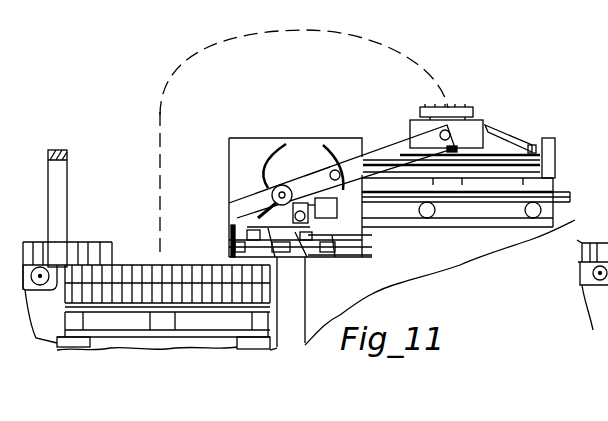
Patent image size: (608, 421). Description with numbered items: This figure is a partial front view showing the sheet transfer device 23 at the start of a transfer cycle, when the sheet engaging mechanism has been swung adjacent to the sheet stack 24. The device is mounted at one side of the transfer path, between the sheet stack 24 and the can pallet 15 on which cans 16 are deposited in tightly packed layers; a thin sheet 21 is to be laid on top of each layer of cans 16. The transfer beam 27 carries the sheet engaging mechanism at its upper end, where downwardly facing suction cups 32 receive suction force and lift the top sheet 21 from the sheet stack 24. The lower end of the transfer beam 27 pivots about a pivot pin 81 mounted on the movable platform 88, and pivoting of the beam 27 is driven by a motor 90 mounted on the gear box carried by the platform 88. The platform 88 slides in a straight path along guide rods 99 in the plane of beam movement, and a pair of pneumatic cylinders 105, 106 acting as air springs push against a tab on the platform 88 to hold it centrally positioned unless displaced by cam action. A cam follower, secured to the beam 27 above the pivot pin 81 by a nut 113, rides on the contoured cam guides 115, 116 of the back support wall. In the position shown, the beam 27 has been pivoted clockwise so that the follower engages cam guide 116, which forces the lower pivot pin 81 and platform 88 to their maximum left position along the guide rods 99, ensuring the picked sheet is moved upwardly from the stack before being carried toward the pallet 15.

The can pallet 15 is at (157, 310).
The cans 16 is at (75, 250).
The sheet 21 is at (505, 156).
The sheet transfer device 23 is at (518, 90).
The sheet stack 24 is at (485, 165).
The transfer beam 27 is at (393, 146).
The suction cup 32 is at (538, 142).
The pivot pin 81 is at (274, 198).
The platform 88 is at (283, 258).
The motor 90 is at (332, 210).
The guide rods 99 is at (333, 248).
The pneumatic cylinder 105 is at (240, 256).
The pneumatic cylinder 106 is at (345, 250).
The nut 113 is at (318, 170).
The cam guide 115 is at (268, 170).
The cam guide 116 is at (352, 121).